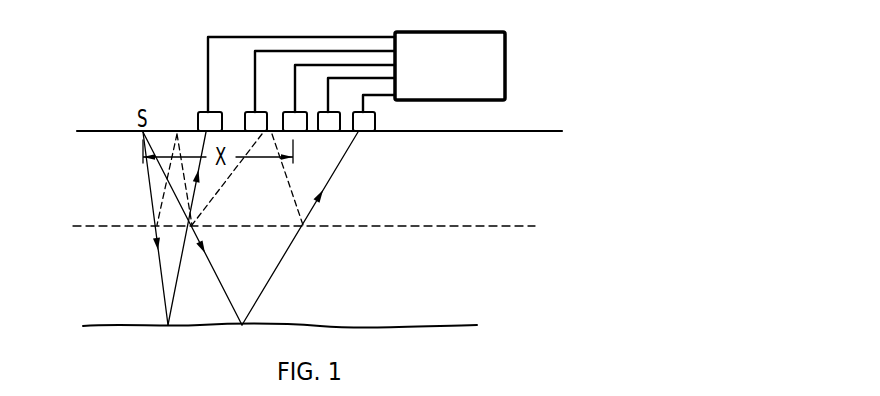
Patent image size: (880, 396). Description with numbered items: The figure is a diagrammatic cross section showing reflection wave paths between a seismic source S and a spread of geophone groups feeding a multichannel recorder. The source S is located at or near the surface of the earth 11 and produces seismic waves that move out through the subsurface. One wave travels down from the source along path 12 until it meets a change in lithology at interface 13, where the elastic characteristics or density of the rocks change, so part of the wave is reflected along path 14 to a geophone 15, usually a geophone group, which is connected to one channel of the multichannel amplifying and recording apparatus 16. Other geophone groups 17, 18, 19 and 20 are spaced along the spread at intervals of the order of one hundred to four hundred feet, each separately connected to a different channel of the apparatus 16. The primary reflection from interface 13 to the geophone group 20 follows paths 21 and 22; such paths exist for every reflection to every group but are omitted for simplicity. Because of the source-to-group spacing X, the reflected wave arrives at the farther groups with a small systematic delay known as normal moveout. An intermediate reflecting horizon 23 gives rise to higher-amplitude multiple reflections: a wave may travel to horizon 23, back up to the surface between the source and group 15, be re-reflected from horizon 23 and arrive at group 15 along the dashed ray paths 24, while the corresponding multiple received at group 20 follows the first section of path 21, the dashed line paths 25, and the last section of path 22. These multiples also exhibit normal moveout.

The surface of the earth 11 is at (497, 130).
The path 12 is at (162, 285).
The interface 13 is at (382, 325).
The path 14 is at (174, 298).
The geophone 15 is at (205, 117).
The multichannel amplifying and recording apparatus 16 is at (445, 42).
The geophone group 17 is at (254, 115).
The geophone group 18 is at (293, 115).
The geophone group 19 is at (330, 114).
The geophone group 20 is at (373, 120).
The path 21 is at (217, 276).
The path 22 is at (264, 290).
The intermediate reflecting horizon 23 is at (398, 226).
The ray paths 24 is at (166, 183).
The dashed line paths 25 is at (293, 198).